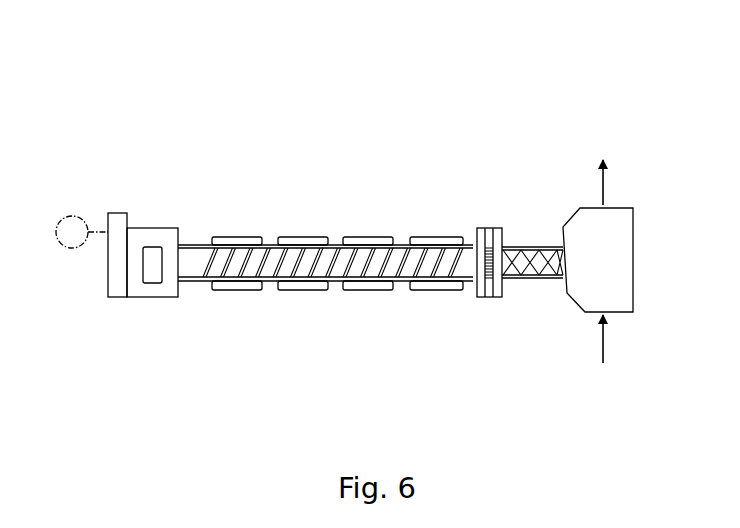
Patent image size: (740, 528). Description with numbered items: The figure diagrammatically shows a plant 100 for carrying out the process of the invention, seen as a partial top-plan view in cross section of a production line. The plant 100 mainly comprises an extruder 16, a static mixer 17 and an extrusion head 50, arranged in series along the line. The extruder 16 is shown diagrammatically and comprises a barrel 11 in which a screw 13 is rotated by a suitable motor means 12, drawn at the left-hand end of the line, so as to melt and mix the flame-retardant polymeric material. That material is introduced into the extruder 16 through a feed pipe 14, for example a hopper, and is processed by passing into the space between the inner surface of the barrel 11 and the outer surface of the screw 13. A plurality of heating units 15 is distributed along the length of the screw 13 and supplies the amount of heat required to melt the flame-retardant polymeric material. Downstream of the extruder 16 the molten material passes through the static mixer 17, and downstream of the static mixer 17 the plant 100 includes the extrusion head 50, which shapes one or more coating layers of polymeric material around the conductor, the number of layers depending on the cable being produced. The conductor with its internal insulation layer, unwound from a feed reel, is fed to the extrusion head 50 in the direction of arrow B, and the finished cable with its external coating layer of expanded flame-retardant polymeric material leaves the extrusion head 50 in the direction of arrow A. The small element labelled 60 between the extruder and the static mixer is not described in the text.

The plant 100 is at (140, 112).
The barrel 11 is at (272, 246).
The motor means 12 is at (70, 228).
The screw 13 is at (213, 262).
The feed pipe 14 is at (152, 272).
The heating units 15 is at (437, 288).
The extruder 16 is at (202, 315).
The static mixer 17 is at (515, 280).
The extrusion head 50 is at (607, 267).
The coupling joint 60 is at (478, 290).